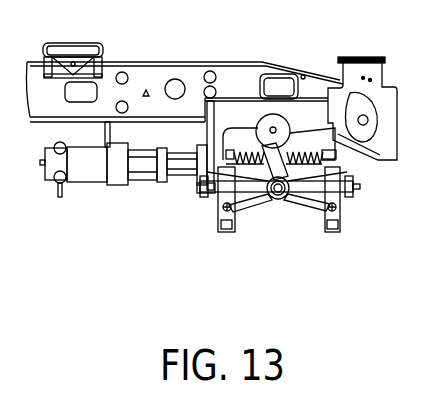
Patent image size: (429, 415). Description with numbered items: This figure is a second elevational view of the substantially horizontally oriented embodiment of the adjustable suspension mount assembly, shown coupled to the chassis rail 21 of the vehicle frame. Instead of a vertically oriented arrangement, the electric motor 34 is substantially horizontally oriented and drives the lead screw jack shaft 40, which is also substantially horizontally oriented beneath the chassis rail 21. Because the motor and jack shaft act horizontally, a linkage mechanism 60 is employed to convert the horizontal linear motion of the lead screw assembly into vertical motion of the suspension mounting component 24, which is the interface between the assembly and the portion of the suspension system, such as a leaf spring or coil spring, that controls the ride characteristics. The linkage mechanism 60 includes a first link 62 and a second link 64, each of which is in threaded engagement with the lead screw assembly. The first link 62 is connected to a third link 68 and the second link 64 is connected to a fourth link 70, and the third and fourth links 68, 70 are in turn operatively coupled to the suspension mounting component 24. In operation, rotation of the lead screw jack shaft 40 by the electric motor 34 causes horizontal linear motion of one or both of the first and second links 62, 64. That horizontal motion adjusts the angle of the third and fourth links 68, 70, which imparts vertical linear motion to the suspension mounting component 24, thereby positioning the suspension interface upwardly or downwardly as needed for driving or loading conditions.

The chassis rail 21 is at (175, 76).
The suspension mounting component 24 is at (272, 127).
The electric motor 34 is at (90, 167).
The lead screw jack shaft 40 is at (252, 155).
The linkage mechanism 60 is at (323, 240).
The first link 62 is at (228, 233).
The second link 64 is at (338, 195).
The third link 68 is at (258, 202).
The fourth link 70 is at (297, 203).